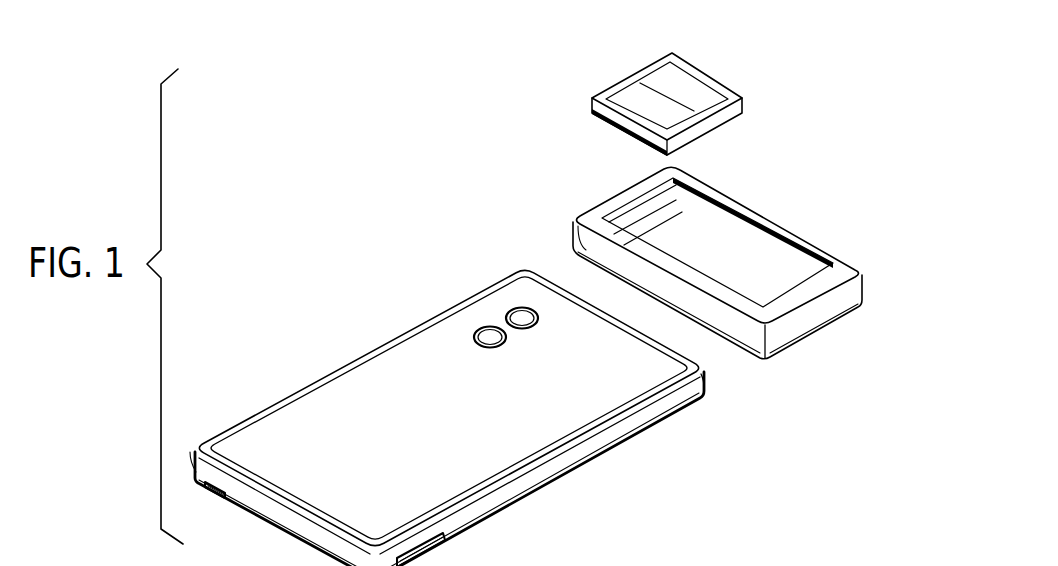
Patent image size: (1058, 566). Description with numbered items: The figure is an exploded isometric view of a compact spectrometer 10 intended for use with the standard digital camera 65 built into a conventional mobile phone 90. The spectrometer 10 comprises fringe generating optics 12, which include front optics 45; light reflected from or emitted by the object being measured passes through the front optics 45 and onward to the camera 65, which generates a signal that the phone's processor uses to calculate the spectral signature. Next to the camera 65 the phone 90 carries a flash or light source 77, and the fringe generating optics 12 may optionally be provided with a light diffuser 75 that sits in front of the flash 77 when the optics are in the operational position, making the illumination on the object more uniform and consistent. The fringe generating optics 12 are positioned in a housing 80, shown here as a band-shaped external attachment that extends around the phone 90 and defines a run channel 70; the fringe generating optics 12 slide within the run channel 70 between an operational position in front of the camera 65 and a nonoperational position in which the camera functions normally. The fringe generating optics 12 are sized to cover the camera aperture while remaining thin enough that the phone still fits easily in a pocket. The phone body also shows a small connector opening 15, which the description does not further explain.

The spectrometer 10 is at (322, 308).
The fringe generating optics 12 is at (580, 94).
The connector port 15 is at (566, 565).
The front optics 45 is at (660, 80).
The camera 65 is at (505, 308).
The run channel 70 is at (740, 275).
The light diffuser 75 is at (628, 97).
The light source 77 is at (478, 328).
The housing 80 is at (592, 208).
The mobile phone 90 is at (333, 414).